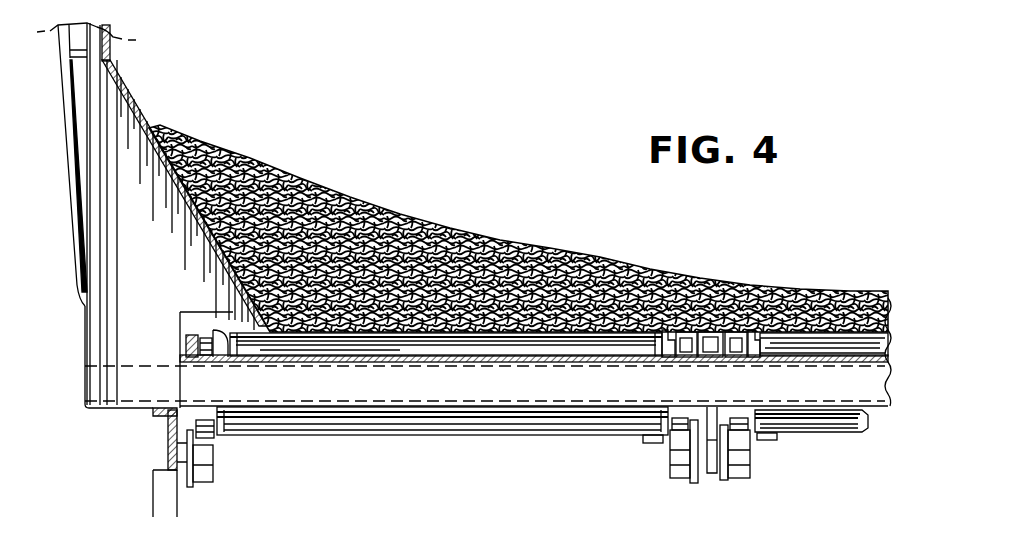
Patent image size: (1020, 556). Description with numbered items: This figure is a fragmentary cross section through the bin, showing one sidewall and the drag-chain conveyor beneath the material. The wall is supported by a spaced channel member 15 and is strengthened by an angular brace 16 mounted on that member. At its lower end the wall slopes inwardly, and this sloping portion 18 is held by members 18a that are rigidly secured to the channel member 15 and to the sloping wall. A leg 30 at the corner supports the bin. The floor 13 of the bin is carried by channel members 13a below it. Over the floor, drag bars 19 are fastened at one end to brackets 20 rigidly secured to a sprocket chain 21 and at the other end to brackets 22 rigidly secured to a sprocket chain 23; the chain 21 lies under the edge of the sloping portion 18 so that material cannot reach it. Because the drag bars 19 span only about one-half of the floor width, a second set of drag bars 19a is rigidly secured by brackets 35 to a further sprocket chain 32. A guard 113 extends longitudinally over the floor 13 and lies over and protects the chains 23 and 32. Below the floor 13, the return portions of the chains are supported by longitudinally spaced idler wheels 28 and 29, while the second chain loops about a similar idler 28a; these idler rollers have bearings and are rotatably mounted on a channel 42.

The floor 13 is at (607, 360).
The channel members 13a is at (365, 388).
The channel members 15 is at (97, 330).
The angular braces 16 is at (68, 200).
The sloping portion 18 is at (128, 97).
The members 18a is at (162, 243).
The drag bars 19 is at (467, 425).
The drag bars 19a is at (830, 348).
The brackets 20 is at (207, 336).
The sprocket chain 21 is at (200, 337).
The brackets 22 is at (652, 327).
The sprocket chain 23 is at (681, 332).
The guard 113 is at (713, 331).
The sprocket chain 32 is at (733, 332).
The brackets 35 is at (767, 332).
The idler wheels 28 is at (207, 452).
The idlers 28a is at (747, 460).
The idler wheels 29 is at (680, 447).
The leg 30 is at (170, 500).
The channel 42 is at (708, 472).